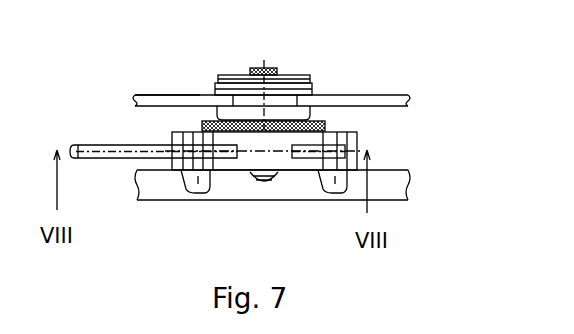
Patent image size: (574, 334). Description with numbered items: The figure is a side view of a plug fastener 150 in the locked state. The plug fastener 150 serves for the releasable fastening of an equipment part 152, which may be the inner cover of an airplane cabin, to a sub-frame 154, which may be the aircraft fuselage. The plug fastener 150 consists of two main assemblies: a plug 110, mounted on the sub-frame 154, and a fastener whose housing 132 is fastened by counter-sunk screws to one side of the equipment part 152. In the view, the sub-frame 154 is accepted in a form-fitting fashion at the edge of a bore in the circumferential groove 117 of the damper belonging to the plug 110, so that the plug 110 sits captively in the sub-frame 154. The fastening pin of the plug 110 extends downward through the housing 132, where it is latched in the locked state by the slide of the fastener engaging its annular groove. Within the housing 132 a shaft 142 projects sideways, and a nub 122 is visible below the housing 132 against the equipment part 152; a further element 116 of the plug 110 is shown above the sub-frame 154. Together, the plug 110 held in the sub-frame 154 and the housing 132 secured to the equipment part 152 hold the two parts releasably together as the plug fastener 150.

The plug 110 is at (233, 65).
The upper disc 116 is at (292, 87).
The circumferential groove 117 is at (285, 98).
The locking nub 122 is at (263, 182).
The housing 132 is at (357, 137).
The shaft 142 is at (105, 155).
The plug fastener 150 is at (125, 100).
The equipment part 152 is at (233, 192).
The sub-frame 154 is at (347, 100).